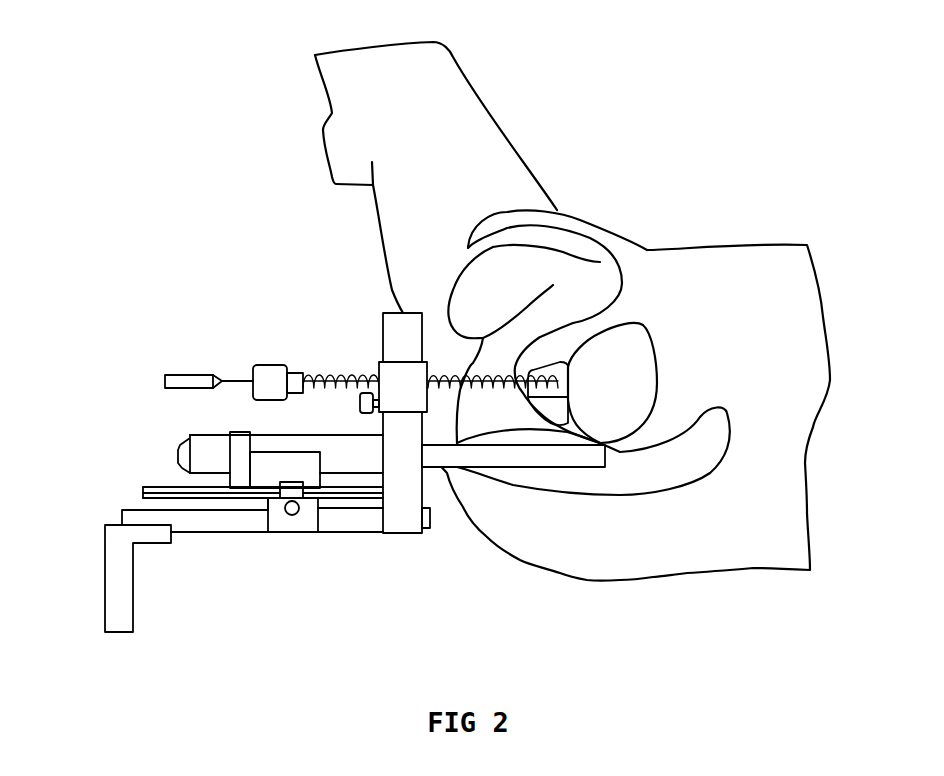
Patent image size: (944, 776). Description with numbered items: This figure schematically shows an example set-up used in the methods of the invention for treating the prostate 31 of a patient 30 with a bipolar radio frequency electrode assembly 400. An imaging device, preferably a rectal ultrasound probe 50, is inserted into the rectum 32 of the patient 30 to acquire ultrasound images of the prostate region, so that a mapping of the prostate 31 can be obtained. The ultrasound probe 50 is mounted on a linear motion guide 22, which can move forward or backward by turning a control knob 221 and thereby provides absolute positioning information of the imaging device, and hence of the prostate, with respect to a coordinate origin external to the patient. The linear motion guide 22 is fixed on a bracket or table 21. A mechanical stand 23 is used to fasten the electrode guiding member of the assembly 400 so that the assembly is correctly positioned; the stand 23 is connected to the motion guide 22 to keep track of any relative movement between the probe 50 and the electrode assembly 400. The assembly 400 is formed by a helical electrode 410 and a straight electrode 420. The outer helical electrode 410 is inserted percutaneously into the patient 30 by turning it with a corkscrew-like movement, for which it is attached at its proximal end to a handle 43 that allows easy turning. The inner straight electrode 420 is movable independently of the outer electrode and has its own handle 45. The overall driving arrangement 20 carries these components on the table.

The driving mechanism 20 is at (123, 460).
The bracket or table 21 is at (140, 582).
The linear motion guide 22 is at (143, 487).
The mechanical stand 23 is at (403, 533).
The control knob 221 is at (285, 510).
The patient 30 is at (780, 200).
The prostate 31 is at (558, 407).
The rectum 32 is at (600, 487).
The handle 43 is at (272, 365).
The handle 45 is at (162, 380).
The rectal ultrasound probe 50 is at (427, 470).
The bipolar electrode assembly 400 is at (322, 332).
The helical electrode 410 is at (378, 363).
The straight electrode 420 is at (240, 381).